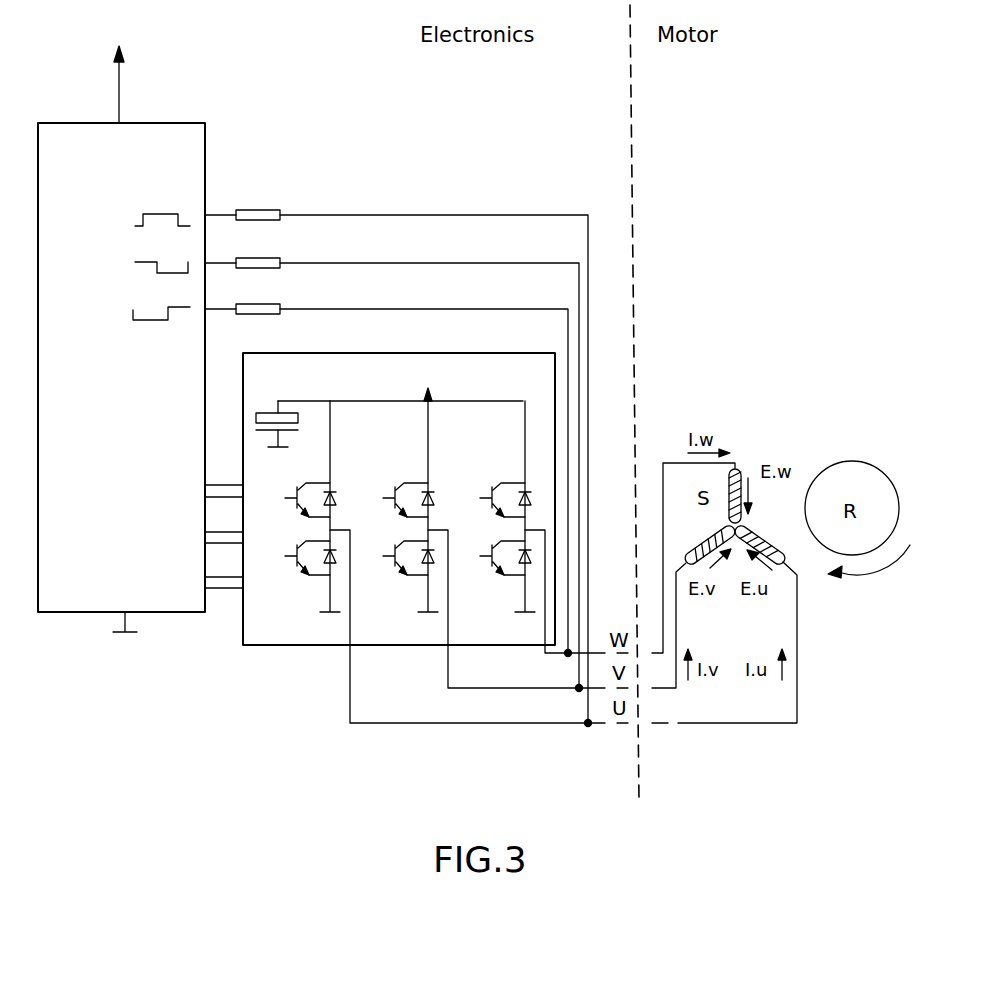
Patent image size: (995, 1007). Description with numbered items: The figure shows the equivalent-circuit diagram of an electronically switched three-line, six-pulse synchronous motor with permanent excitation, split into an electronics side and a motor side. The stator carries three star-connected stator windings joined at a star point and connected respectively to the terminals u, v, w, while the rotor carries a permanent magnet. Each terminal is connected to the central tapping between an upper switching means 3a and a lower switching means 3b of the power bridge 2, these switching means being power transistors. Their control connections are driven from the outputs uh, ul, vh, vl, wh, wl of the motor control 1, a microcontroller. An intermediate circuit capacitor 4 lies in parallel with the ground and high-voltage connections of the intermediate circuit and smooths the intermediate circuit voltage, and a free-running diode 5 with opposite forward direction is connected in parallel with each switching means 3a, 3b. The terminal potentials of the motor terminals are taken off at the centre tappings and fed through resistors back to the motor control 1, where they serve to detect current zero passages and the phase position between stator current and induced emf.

The motor control 1 is at (50, 614).
The power bridge 2 is at (424, 539).
The upper switching means 3a is at (302, 484).
The lower switching means 3b is at (299, 552).
The intermediate circuit capacitor 4 is at (266, 412).
The free-running diode 5 is at (343, 557).